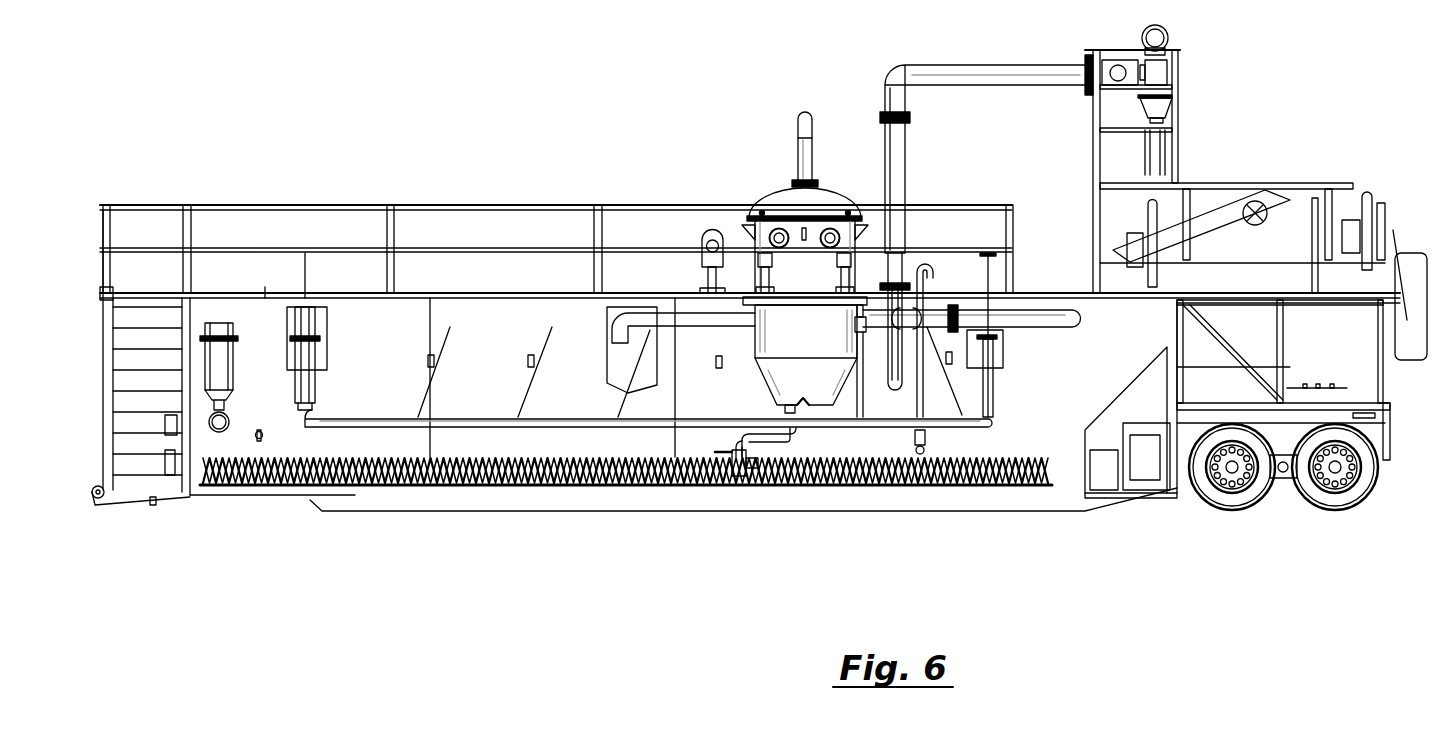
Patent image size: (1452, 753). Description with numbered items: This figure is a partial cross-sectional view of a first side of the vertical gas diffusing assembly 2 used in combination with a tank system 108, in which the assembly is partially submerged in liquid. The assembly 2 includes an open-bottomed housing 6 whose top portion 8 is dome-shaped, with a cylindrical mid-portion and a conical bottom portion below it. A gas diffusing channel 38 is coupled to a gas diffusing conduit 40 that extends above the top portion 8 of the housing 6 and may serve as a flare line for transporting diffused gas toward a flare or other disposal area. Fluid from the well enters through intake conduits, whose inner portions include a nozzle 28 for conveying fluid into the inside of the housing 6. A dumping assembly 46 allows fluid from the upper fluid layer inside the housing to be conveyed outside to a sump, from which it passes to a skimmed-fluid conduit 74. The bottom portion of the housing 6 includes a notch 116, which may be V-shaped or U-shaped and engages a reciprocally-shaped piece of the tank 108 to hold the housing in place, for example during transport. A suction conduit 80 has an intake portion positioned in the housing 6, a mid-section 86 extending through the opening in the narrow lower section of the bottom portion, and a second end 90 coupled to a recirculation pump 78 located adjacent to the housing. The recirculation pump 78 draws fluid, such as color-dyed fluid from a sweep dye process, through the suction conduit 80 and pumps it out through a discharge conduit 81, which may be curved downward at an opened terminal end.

The tank system 108 is at (372, 122).
The gas diffusing conduit 40 is at (800, 176).
The gas diffusing channel 38 is at (792, 183).
The top portion 8 is at (821, 198).
The nozzle 28 is at (782, 232).
The discharge conduit 81 is at (923, 265).
The vertical gas diffusing assembly 2 is at (800, 341).
The dumping assembly 46 is at (875, 330).
The open-bottomed housing 6 is at (855, 357).
The skimmed-fluid conduit 74 is at (842, 347).
The notch 116 is at (805, 402).
The mid-section 86 is at (795, 413).
The suction conduit 80 is at (762, 440).
The recirculation pump 78 is at (740, 447).
The second end 90 is at (740, 438).